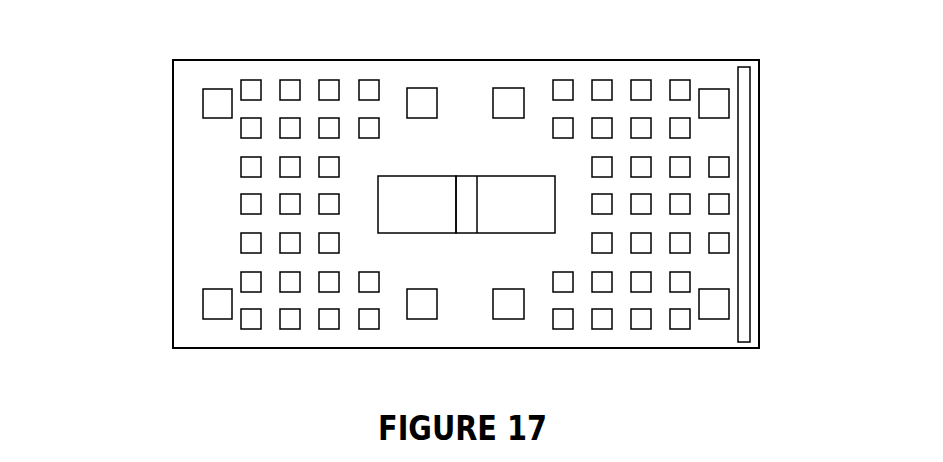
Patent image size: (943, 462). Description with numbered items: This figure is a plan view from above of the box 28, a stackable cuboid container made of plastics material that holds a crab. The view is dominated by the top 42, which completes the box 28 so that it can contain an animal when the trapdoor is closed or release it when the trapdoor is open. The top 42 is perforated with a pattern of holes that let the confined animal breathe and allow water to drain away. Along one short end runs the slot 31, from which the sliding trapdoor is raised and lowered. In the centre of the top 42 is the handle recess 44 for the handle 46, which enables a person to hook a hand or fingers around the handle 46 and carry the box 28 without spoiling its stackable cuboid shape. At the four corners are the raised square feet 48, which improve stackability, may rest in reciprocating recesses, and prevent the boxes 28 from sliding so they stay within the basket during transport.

The box 28 is at (135, 102).
The slot 31 is at (745, 95).
The top 42 is at (663, 74).
The handle recess 44 is at (407, 193).
The handle 46 is at (467, 193).
The raised square feet 48 is at (213, 98).